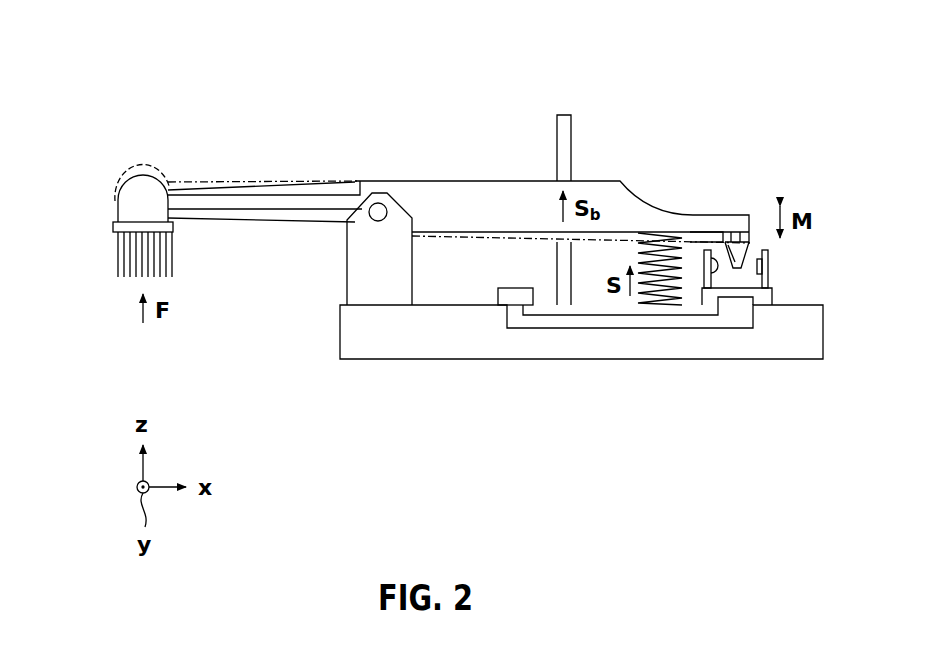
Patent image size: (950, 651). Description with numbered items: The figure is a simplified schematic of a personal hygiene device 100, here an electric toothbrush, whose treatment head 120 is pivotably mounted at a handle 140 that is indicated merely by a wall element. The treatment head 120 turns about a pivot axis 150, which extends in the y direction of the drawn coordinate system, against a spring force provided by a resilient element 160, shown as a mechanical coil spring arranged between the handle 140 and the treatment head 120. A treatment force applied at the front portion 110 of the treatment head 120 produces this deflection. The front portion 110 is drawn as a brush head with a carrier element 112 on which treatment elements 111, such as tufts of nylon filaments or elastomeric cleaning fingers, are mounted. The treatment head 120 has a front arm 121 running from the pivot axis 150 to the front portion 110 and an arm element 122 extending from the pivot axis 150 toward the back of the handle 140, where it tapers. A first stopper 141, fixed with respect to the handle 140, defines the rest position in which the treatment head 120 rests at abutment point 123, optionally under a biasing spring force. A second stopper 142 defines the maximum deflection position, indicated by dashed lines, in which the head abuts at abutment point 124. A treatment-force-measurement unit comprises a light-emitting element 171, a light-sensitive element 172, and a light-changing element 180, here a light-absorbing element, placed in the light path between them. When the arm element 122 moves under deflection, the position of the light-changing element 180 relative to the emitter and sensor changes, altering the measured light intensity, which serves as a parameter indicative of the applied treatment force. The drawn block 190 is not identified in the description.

The personal hygiene device 100 is at (199, 69).
The front portion 110 is at (127, 149).
The treatment elements 111 is at (117, 260).
The carrier element 112 is at (115, 202).
The treatment head 120 is at (260, 165).
The front arm 121 is at (227, 217).
The arm element 122 is at (487, 180).
The abutment point 123 is at (573, 180).
The abutment point 124 is at (575, 243).
The handle 140 is at (378, 345).
The first stopper 141 is at (562, 114).
The second stopper 142 is at (562, 297).
The pivot axis 150 is at (379, 202).
The resilient element 160 is at (688, 244).
The light-emitting element 171 is at (703, 273).
The light-sensitive element 172 is at (768, 266).
The light-changing element 180 is at (728, 240).
The stop block 190 is at (500, 297).